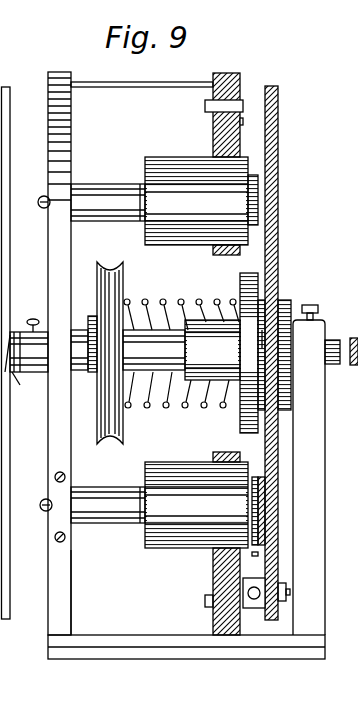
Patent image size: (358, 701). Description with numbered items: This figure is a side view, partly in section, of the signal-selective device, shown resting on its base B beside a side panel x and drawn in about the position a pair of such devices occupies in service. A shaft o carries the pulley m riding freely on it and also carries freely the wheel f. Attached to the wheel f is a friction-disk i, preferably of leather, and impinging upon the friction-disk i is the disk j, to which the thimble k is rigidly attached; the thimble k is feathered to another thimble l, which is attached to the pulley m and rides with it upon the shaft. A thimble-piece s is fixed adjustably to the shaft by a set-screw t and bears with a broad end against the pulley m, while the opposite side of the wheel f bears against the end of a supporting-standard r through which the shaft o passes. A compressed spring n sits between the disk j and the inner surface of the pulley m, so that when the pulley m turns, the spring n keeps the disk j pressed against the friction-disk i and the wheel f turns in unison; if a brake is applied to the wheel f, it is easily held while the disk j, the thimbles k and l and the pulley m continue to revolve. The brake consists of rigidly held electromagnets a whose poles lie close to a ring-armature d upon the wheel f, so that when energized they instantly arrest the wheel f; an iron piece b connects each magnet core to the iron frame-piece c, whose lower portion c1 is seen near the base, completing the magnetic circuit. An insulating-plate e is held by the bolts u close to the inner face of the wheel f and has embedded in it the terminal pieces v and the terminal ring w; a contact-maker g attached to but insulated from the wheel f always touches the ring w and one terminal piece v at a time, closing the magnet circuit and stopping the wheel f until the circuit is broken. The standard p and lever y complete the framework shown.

The base B is at (186, 667).
The side wall panel x is at (13, 353).
The frame-piece c is at (62, 228).
The standard lower portion c1 is at (61, 592).
The bolts u is at (143, 58).
The insulating-plate e is at (226, 354).
The supporting-standard r is at (215, 107).
The terminal ring w is at (252, 344).
The terminal pieces v is at (201, 597).
The electromagnets a is at (196, 352).
The piece b is at (108, 353).
The ring-armature d is at (280, 212).
The wheel f is at (279, 353).
The contact-maker g is at (266, 603).
The pulley m is at (121, 356).
The thimble-piece s is at (53, 344).
The set-screw t is at (33, 318).
The lever y is at (10, 335).
The shaft o is at (20, 385).
The thimble l is at (154, 350).
The compressed spring n is at (181, 342).
The thimble k is at (212, 350).
The disk j is at (265, 353).
The friction-disk i is at (263, 348).
The standard p is at (309, 470).